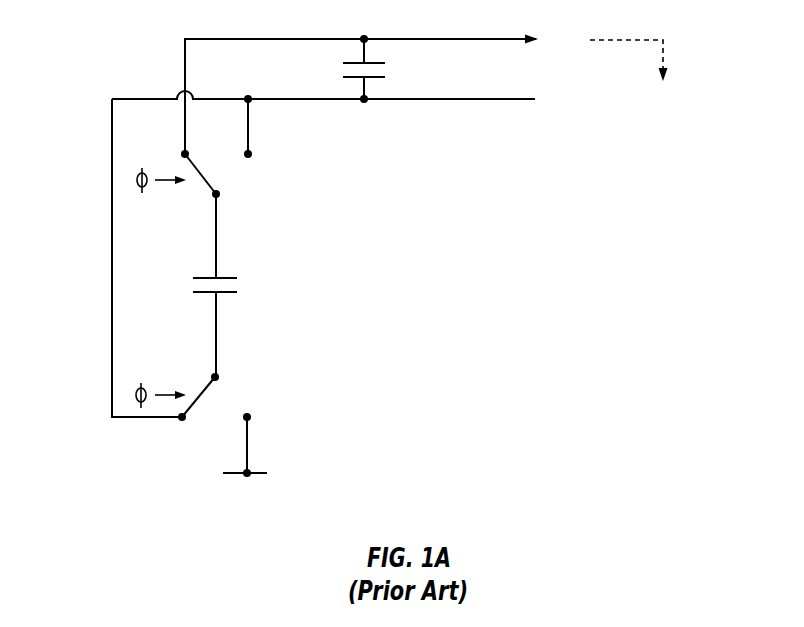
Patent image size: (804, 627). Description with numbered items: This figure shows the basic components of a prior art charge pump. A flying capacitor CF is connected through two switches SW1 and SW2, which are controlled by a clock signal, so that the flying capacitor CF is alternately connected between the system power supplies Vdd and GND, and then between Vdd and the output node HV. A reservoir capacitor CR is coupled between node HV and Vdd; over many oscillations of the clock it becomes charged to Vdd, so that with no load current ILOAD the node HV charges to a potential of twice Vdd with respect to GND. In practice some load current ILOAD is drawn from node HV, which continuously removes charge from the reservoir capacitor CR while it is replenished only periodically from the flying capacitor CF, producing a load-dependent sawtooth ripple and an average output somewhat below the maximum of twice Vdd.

The node HV is at (553, 44).
The element Vdd is at (556, 97).
The load current ILOAD is at (639, 78).
The reservoir capacitor CR is at (382, 69).
The flying capacitor CF is at (233, 285).
The switch SW1 is at (221, 180).
The switch SW2 is at (223, 397).
The Gnd GND is at (276, 450).